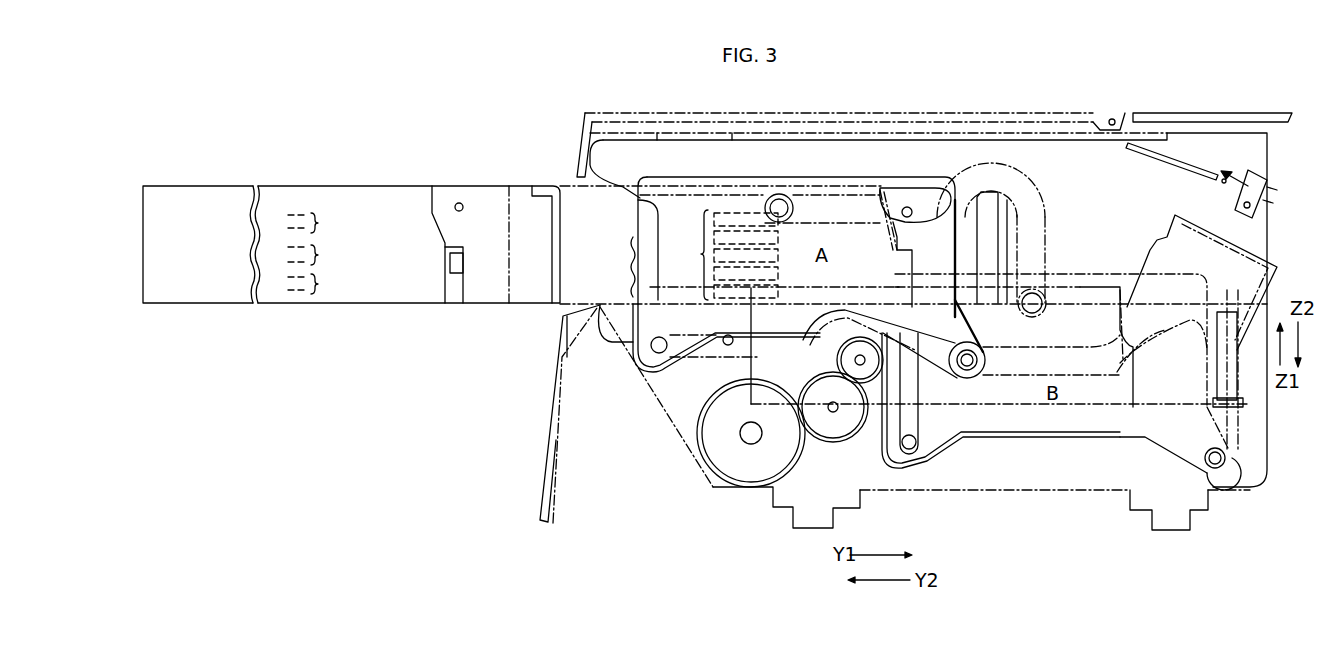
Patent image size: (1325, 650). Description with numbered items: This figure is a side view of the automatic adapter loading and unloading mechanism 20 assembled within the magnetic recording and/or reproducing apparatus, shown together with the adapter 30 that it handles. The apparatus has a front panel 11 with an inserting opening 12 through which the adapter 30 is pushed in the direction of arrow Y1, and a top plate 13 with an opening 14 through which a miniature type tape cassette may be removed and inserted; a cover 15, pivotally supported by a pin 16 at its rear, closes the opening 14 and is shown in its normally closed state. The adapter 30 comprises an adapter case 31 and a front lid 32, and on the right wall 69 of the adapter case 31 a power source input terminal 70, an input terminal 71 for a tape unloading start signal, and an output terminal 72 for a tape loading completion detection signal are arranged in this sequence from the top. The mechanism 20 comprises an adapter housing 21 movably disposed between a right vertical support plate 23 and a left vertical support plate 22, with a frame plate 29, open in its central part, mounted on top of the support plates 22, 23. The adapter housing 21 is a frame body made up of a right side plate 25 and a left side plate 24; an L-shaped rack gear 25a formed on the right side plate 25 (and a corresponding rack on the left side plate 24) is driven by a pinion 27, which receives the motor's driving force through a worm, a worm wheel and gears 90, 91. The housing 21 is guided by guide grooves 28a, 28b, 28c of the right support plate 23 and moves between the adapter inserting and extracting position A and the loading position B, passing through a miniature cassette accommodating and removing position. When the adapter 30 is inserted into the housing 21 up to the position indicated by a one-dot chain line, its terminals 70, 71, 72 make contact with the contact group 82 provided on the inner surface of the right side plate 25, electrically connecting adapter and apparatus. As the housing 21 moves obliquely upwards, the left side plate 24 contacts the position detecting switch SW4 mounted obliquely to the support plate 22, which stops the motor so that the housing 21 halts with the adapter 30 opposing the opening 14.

The front panel 11 is at (545, 421).
The inserting opening 12 is at (560, 312).
The top plate 13 is at (1183, 113).
The opening 14 is at (716, 113).
The cover 15 is at (910, 113).
The pin 16 is at (1108, 113).
The loading and unloading mechanism 20 is at (1154, 98).
The adapter housing 21 is at (875, 175).
The left vertical support plate 22 is at (980, 493).
The right vertical support plate 23 is at (981, 509).
The left side plate 24 is at (913, 309).
The right side plate 25 is at (768, 177).
The L-shaped rack gear 25a is at (705, 353).
The pinion 27 is at (838, 362).
The guide groove 28a is at (1028, 188).
The guide groove 28b is at (940, 330).
The guide groove 28c is at (1093, 347).
The frame plate 29 is at (1240, 132).
The adapter 30 is at (334, 186).
The adapter case 31 is at (246, 186).
The front lid 32 is at (491, 186).
The right wall 69 is at (210, 304).
The power source input terminal 70 is at (316, 223).
The input terminal for tape unloading start signal 71 is at (316, 255).
The output terminal for tape loading completion detection signal 72 is at (316, 284).
The contact group 82 is at (704, 250).
The gear 90 is at (705, 436).
The gear 91 is at (840, 432).
The position detecting switch SW4 is at (1215, 181).